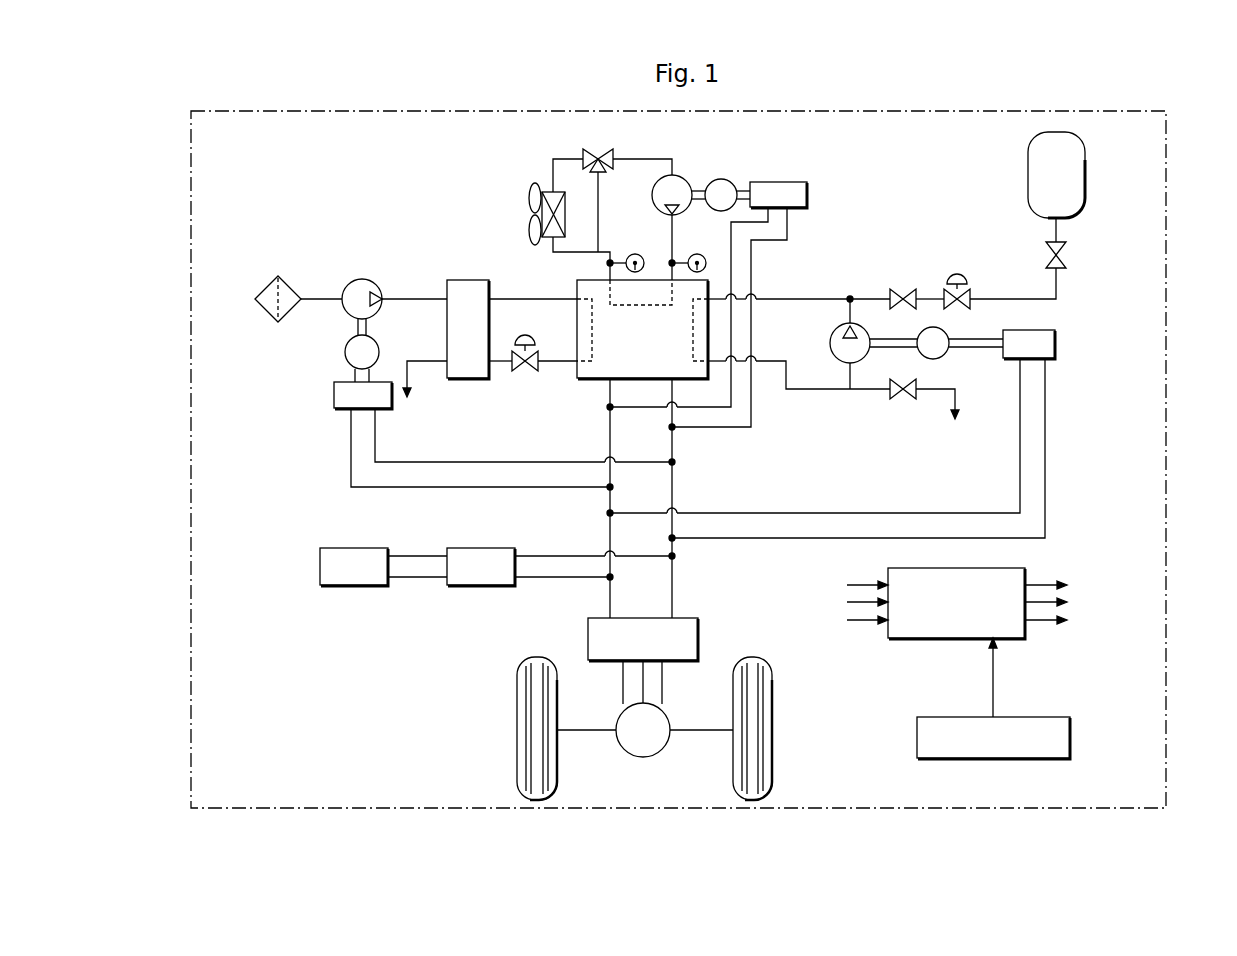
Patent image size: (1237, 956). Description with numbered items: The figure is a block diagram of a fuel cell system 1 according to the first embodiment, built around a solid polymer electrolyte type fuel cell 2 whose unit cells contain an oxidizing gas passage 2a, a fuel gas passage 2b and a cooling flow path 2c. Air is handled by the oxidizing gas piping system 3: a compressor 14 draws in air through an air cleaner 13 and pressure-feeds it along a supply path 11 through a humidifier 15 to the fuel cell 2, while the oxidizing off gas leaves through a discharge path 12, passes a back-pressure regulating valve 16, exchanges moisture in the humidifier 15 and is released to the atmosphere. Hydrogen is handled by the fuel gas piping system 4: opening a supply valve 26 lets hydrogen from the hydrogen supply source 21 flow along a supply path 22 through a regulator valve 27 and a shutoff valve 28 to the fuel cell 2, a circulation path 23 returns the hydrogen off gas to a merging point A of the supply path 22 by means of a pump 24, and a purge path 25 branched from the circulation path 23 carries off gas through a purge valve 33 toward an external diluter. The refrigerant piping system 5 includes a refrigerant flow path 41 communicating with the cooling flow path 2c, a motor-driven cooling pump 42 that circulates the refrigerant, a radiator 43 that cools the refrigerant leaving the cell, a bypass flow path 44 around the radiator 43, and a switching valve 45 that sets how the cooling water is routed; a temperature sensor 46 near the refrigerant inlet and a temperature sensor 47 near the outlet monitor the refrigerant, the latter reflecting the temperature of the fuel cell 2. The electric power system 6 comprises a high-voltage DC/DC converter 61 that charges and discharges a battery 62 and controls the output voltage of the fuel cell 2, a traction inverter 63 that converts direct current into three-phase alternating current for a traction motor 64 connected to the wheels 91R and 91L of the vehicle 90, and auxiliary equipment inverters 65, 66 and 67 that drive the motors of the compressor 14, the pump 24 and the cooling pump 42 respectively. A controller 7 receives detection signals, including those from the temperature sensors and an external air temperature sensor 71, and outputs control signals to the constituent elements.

The fuel cell system 1 is at (1166, 160).
The fuel cell 2 is at (641, 352).
The oxidizing gas passage 2a is at (595, 345).
The fuel gas passage 2b is at (690, 320).
The cooling flow path 2c is at (636, 308).
The oxidizing gas piping system 3 is at (399, 262).
The fuel gas piping system 4 is at (972, 248).
The refrigerant piping system 5 is at (515, 155).
The electric power system 6 is at (712, 483).
The controller 7 is at (957, 638).
The supply path 11 is at (512, 298).
The discharge path 12 is at (428, 365).
The air cleaner 13 is at (292, 286).
The compressor 14 is at (362, 279).
The humidifier 15 is at (470, 380).
The back-pressure regulating valve 16 is at (525, 372).
The hydrogen supply source 21 is at (1085, 172).
The supply path 22 is at (1058, 287).
The circulation path 23 is at (823, 389).
The pump 24 is at (831, 341).
The purge path 25 is at (958, 389).
The supply valve 26 is at (1066, 255).
The regulator valve 27 is at (970, 296).
The shutoff valve 28 is at (892, 290).
The purge valve 33 is at (903, 400).
The refrigerant flow path 41 is at (648, 158).
The cooling pump 42 is at (688, 180).
The radiator 43 is at (530, 206).
The bypass flow path 44 is at (599, 208).
The switching valve 45 is at (599, 150).
The temperature sensor 46 is at (697, 254).
The temperature sensor 47 is at (637, 254).
The high-voltage DC/DC converter 61 is at (476, 548).
The battery 62 is at (357, 548).
The traction inverter 63 is at (698, 628).
The traction motor 64 is at (672, 718).
The auxiliary equipment inverter 65 is at (333, 400).
The auxiliary equipment inverter 66 is at (1055, 345).
The auxiliary equipment inverter 67 is at (807, 190).
The external air temperature sensor 71 is at (1033, 717).
The vehicle 90 is at (580, 752).
The wheel 91R is at (517, 722).
The wheel 91L is at (772, 717).
The merging point A is at (851, 296).